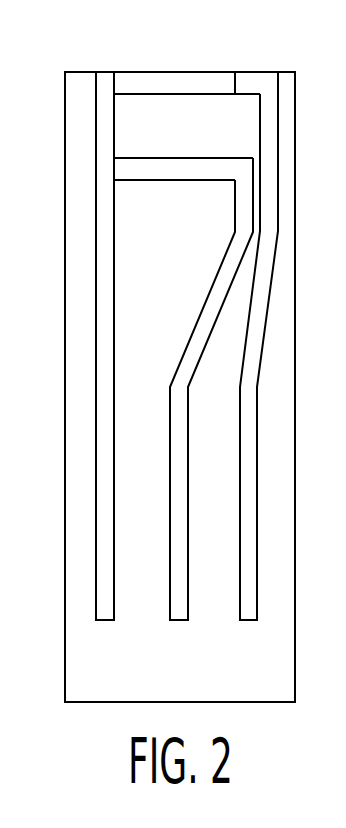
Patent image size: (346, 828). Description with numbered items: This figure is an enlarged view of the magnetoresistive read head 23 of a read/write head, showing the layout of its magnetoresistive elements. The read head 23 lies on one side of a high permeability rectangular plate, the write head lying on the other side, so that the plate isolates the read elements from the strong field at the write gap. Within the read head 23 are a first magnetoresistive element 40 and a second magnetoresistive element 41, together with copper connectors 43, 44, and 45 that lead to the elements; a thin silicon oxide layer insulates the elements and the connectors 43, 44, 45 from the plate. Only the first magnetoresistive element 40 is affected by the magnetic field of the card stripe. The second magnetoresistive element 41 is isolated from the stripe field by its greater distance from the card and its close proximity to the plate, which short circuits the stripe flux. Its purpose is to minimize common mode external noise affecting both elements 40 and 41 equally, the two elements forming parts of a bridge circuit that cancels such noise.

The magnetoresistive read head 23 is at (47, 395).
The first magnetoresistive element 40 is at (141, 80).
The second magnetoresistive element 41 is at (200, 172).
The copper connector 43 is at (249, 621).
The copper connector 44 is at (179, 621).
The copper connector 45 is at (105, 621).